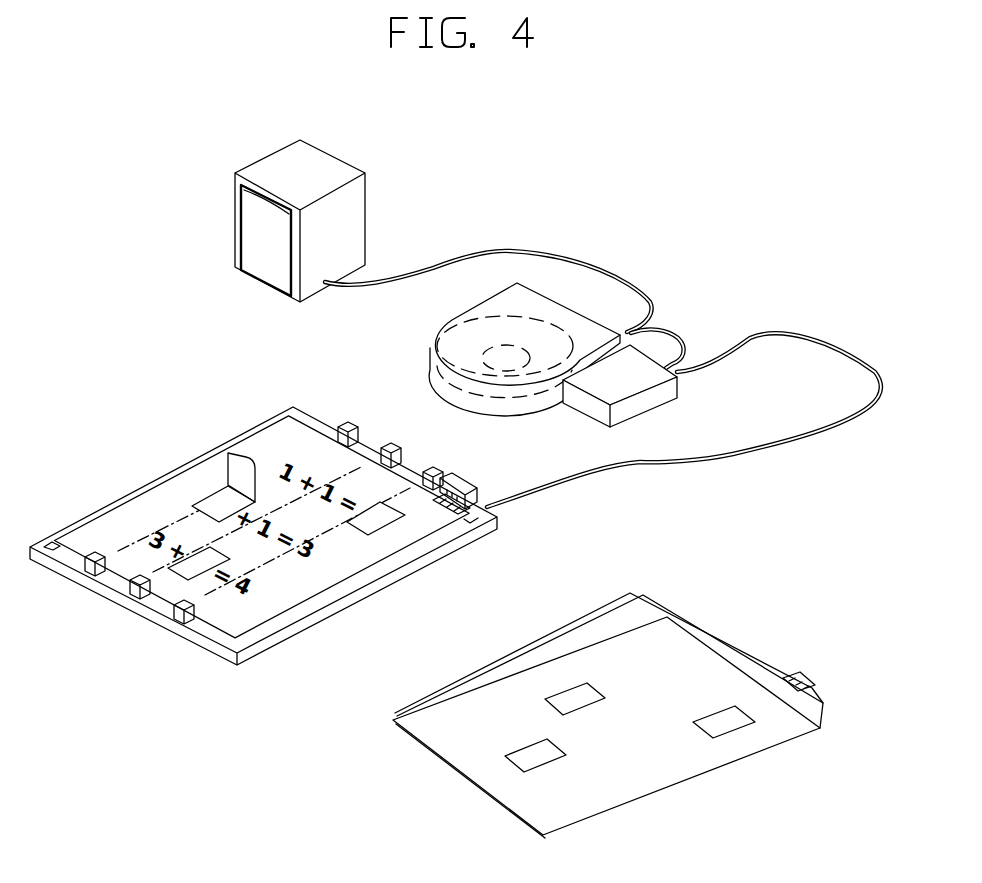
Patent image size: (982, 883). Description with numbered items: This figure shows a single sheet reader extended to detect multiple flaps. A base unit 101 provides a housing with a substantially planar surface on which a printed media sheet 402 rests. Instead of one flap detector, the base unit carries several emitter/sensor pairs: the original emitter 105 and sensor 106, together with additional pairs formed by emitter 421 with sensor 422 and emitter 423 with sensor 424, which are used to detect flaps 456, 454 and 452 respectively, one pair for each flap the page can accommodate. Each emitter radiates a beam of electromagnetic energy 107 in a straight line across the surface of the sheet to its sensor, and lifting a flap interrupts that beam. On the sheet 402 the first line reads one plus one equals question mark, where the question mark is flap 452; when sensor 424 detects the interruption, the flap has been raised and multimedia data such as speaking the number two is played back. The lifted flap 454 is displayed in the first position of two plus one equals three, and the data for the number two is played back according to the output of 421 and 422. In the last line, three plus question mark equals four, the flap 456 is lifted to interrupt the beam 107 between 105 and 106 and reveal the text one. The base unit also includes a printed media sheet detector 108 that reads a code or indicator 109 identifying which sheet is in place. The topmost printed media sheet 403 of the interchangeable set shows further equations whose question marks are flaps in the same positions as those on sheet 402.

The base unit 101 is at (267, 420).
The printed media sheet 402 is at (175, 498).
The beam of electromagnetic energy 107 is at (178, 522).
The flap 454 is at (235, 475).
The flap 452 is at (373, 530).
The flap 456 is at (198, 572).
The sensor 422 is at (348, 422).
The sensor 106 is at (392, 447).
The sensor 424 is at (438, 470).
The printed media sheet detector 108 is at (458, 480).
The indicator 109 is at (457, 513).
The emitter 421 is at (90, 570).
The emitter 105 is at (133, 595).
The emitter 423 is at (177, 617).
The printed media sheet 403 is at (737, 680).